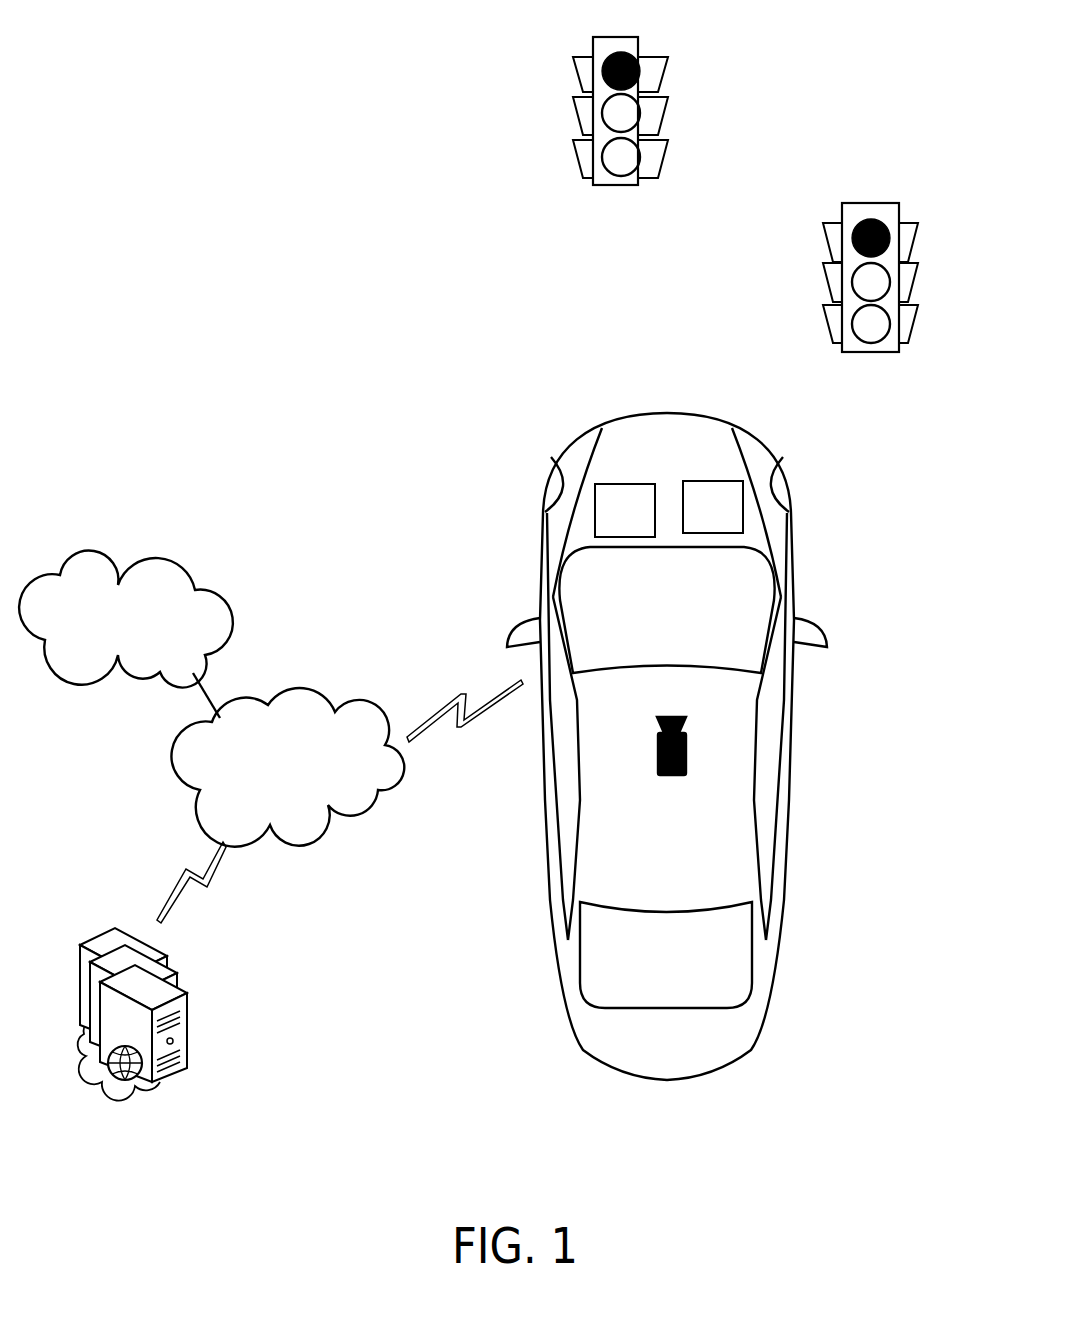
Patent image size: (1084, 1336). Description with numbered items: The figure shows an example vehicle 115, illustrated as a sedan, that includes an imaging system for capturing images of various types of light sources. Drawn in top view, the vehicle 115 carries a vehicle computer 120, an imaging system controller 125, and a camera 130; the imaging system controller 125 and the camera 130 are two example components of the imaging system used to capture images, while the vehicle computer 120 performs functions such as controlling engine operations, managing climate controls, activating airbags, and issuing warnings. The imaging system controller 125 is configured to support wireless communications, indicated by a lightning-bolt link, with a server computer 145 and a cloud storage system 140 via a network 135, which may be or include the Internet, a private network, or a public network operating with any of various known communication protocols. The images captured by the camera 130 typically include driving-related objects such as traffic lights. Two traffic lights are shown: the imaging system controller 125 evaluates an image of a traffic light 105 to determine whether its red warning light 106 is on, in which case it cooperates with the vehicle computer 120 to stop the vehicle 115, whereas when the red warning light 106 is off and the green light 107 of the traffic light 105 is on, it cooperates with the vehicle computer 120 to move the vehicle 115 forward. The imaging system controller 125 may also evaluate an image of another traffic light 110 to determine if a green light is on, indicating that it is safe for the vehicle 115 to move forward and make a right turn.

The traffic light 105 is at (630, 142).
The red warning light 106 is at (637, 55).
The green light 107 is at (636, 172).
The traffic light 110 is at (907, 184).
The vehicle 115 is at (596, 730).
The vehicle computer 120 is at (643, 524).
The imaging system controller 125 is at (733, 522).
The camera 130 is at (671, 775).
The network 135 is at (257, 782).
The cloud storage system 140 is at (107, 627).
The server computer 145 is at (203, 1033).